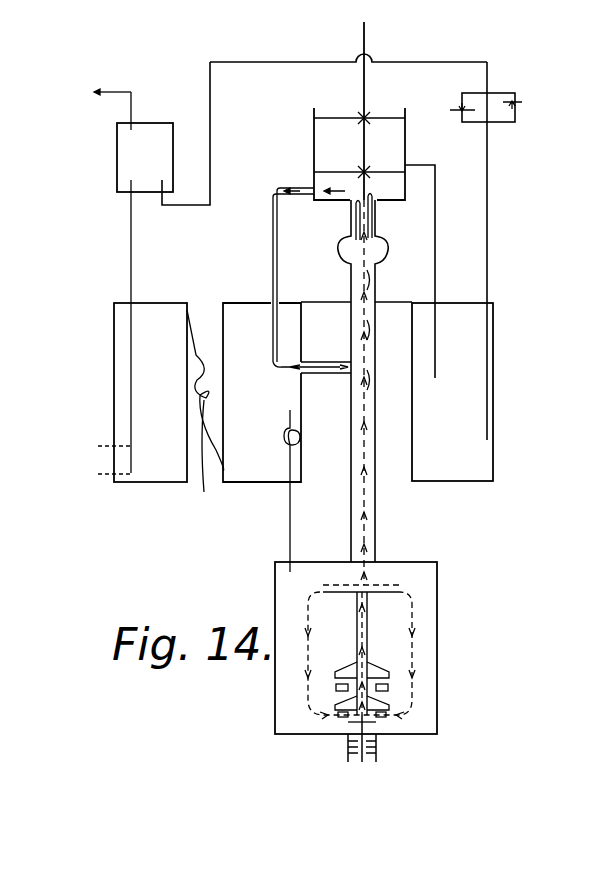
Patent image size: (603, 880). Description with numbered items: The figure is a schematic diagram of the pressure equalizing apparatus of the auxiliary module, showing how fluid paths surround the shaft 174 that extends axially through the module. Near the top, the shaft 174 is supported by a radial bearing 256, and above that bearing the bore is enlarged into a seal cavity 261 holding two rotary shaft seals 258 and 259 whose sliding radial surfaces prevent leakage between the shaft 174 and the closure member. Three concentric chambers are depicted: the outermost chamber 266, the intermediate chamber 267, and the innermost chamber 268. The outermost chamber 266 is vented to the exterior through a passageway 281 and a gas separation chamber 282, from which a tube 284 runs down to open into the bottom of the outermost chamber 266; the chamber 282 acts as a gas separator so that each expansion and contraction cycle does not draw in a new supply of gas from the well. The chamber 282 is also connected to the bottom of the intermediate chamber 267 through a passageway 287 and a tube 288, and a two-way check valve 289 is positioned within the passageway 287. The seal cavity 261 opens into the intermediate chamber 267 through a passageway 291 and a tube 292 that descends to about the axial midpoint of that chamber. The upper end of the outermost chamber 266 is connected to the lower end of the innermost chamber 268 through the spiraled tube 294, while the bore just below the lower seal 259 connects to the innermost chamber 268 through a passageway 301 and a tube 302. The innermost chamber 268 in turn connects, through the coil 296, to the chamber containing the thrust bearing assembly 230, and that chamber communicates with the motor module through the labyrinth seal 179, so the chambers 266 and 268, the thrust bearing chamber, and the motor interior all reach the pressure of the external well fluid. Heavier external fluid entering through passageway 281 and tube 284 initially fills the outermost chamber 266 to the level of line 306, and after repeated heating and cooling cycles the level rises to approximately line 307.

The shaft 174 is at (366, 50).
The passageway 281 is at (117, 90).
The gas separation chamber 282 is at (128, 158).
The seal cavity 261 is at (328, 136).
The rotary shaft seal 258 is at (367, 117).
The rotary shaft seal 259 is at (368, 171).
The two-way check valve 289 is at (525, 95).
The passageway 301 is at (273, 207).
The radial bearing 256 is at (352, 216).
The passageway 291 is at (437, 212).
The passageway 287 is at (488, 236).
The tube 302 is at (267, 291).
The innermost chamber 268 is at (222, 305).
The intermediate chamber 267 is at (416, 303).
The tube 292 is at (437, 330).
The tube 288 is at (488, 354).
The tube 284 is at (130, 326).
The outermost chamber 266 is at (122, 354).
The line 307 is at (96, 446).
The line 306 is at (96, 474).
The tube 294 is at (201, 410).
The coil 296 is at (290, 503).
The thrust bearing assembly 230 is at (409, 693).
The labyrinth seal 179 is at (348, 746).